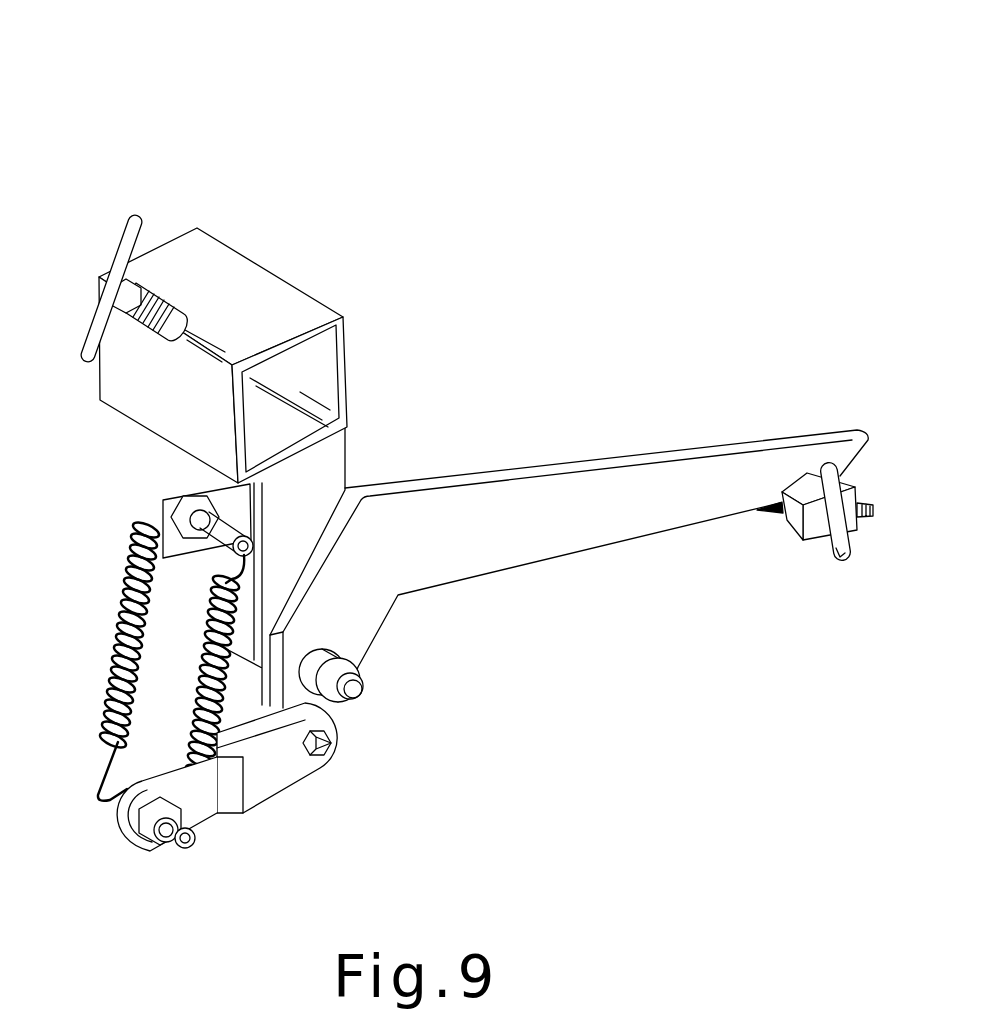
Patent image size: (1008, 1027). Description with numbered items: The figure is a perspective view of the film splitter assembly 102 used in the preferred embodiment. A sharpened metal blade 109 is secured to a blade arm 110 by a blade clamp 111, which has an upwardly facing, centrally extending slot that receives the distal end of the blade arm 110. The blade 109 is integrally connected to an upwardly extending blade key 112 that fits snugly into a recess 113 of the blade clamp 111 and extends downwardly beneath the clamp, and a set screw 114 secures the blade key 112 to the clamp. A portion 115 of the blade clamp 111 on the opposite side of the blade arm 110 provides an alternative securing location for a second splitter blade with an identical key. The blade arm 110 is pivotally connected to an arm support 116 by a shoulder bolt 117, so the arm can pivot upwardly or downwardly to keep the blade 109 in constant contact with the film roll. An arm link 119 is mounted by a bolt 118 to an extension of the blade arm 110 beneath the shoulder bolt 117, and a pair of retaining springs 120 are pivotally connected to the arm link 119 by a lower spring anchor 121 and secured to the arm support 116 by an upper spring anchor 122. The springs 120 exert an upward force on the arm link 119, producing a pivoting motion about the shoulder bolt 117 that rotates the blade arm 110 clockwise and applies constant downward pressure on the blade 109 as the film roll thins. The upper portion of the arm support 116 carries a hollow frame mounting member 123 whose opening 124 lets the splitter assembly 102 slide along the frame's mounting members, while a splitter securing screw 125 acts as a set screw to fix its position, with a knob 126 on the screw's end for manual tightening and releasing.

The splitter assembly 102 is at (142, 120).
The sharpened metal blade 109 is at (843, 556).
The blade arm 110 is at (490, 567).
The blade clamp 111 is at (793, 520).
The blade key 112 is at (850, 535).
The recess 113 is at (803, 482).
The set screw 114 is at (873, 507).
The portion of blade clamp 115 is at (757, 511).
The arm support 116 is at (337, 466).
The shoulder bolt 117 is at (348, 695).
The bolt 118 is at (330, 758).
The arm link 119 is at (277, 787).
The retaining springs 120 is at (105, 693).
The lower spring anchor 121 is at (167, 840).
The upper spring anchor 122 is at (190, 530).
The hollow frame mounting member 123 is at (293, 292).
The opening 124 is at (310, 393).
The splitter securing screw 125 is at (136, 303).
The knob 126 is at (139, 226).